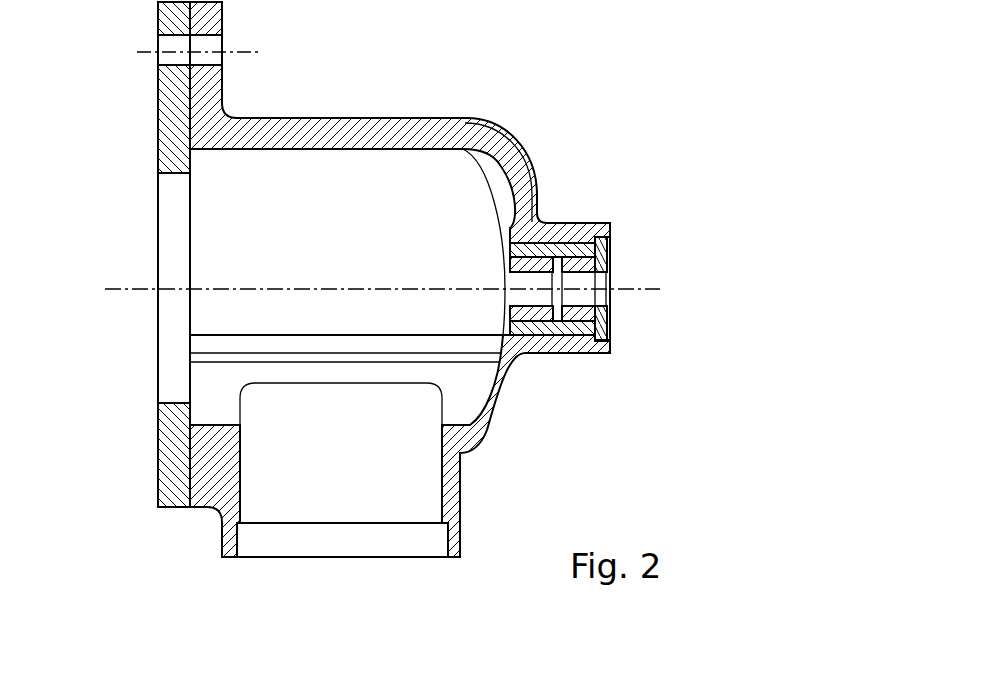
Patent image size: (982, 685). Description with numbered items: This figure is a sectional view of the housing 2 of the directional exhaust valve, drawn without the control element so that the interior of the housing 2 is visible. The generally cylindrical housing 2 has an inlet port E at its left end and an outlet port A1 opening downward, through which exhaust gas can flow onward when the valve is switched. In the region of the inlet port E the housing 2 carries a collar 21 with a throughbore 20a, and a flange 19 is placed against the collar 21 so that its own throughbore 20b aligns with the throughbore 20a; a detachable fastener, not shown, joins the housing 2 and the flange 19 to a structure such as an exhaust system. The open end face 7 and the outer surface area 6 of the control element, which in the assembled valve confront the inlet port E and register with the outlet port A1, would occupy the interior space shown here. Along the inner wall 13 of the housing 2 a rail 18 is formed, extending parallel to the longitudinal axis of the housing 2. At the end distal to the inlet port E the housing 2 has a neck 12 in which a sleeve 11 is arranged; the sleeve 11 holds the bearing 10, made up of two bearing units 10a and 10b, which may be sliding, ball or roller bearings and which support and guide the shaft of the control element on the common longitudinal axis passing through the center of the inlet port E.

The housing 2 is at (545, 128).
The outer surface area 6 is at (217, 312).
The open end face 7 is at (207, 217).
The bearing 10 is at (572, 383).
The bearing unit 10a is at (505, 270).
The bearing unit 10b is at (598, 300).
The sleeve 11 is at (505, 326).
The neck 12 is at (573, 203).
The inner wall 13 is at (370, 152).
The rail 18 is at (315, 348).
The flange 19 is at (153, 98).
The throughbore 20a is at (205, 55).
The throughbore 20b is at (170, 52).
The collar 21 is at (226, 79).
The inlet port E is at (180, 247).
The outlet port A1 is at (344, 538).